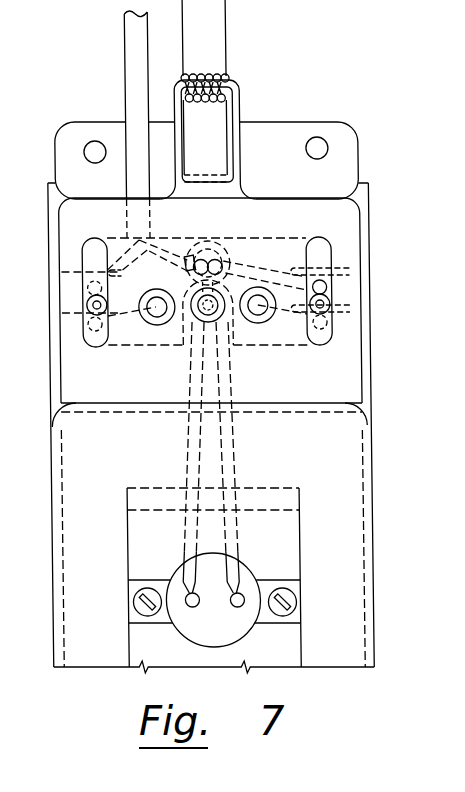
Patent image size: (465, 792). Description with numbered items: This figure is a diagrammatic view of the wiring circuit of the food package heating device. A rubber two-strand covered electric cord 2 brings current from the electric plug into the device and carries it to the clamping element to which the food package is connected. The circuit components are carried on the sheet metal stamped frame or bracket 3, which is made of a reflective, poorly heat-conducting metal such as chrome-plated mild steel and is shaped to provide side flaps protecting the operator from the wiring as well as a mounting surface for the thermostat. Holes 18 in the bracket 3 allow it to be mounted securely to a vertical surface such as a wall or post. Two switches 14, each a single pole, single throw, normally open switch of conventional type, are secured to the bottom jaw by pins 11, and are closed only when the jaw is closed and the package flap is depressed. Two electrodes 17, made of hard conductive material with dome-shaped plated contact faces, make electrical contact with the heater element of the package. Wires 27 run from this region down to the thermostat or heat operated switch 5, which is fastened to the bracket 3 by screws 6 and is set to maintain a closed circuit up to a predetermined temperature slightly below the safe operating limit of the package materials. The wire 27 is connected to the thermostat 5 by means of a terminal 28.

The electric cord 2 is at (129, 37).
The frame or bracket 3 is at (99, 126).
The holes 18 is at (88, 152).
The switch 14 is at (87, 258).
The pins 11 is at (74, 311).
The electrode 17 is at (153, 313).
The wire 27 is at (232, 452).
The thermostat 5 is at (183, 632).
The screws 6 is at (145, 588).
The terminal 28 is at (244, 613).